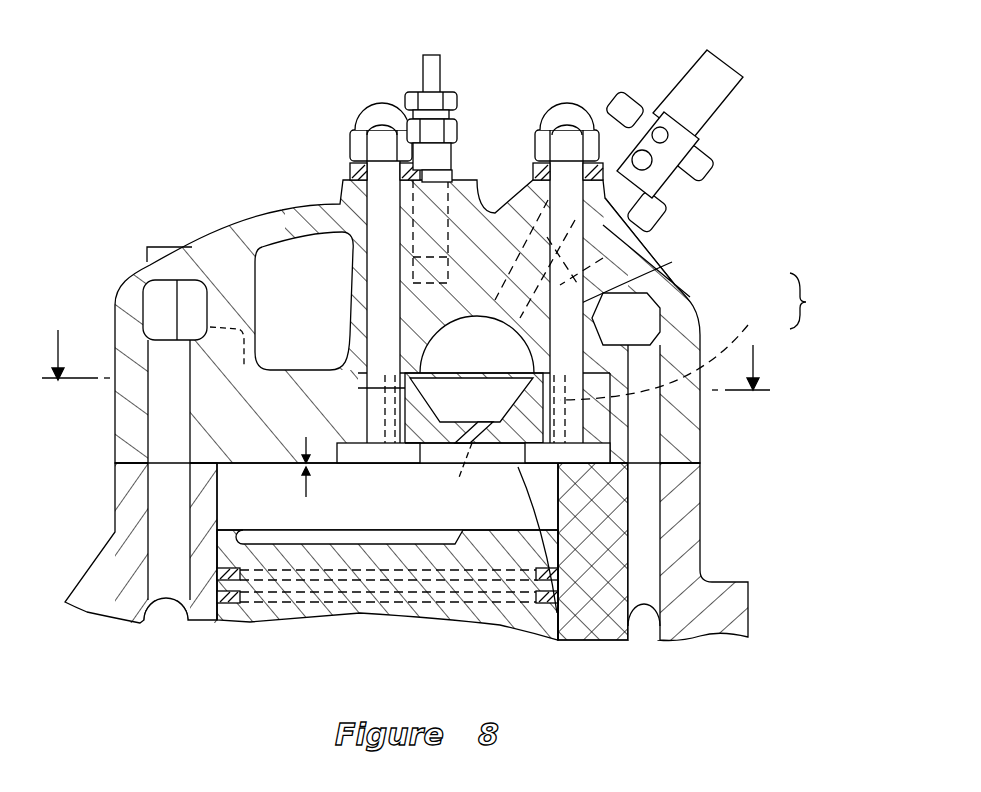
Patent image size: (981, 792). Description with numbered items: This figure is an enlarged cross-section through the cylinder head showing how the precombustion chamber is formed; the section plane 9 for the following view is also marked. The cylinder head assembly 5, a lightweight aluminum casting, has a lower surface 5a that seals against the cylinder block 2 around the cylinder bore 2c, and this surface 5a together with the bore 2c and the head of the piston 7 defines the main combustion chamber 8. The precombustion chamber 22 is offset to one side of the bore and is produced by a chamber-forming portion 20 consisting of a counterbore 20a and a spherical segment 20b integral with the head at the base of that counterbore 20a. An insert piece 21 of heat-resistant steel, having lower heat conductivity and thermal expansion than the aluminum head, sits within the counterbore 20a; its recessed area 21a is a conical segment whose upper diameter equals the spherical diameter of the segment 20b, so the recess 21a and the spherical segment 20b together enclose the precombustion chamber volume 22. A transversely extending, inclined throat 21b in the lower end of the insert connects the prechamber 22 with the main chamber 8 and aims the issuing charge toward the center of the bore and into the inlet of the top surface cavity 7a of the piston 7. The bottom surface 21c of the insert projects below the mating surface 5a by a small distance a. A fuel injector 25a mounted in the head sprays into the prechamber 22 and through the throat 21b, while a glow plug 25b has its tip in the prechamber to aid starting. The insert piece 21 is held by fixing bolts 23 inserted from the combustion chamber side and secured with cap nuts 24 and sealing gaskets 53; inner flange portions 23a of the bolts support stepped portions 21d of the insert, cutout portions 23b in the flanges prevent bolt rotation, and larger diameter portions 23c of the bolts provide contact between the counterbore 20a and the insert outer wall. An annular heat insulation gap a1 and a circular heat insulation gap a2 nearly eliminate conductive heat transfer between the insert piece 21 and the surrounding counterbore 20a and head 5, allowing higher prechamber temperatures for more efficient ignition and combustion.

The cylinder block 2 is at (712, 527).
The cylinder bore 2c is at (644, 640).
The cylinder head assembly 5 is at (708, 453).
The lower surface of the cylinder head 5a is at (256, 465).
The piston 7 is at (498, 615).
The top surface cavity 7a is at (354, 540).
The main combustion chamber 8 is at (555, 498).
The section line of FIG. 9 is at (397, 360).
The precombustion chamber forming portion 20 is at (814, 301).
The counterbore 20a is at (493, 350).
The spherical segment 20b is at (598, 289).
The insert piece 21 is at (420, 472).
The recessed area 21a is at (458, 450).
The throat 21b is at (446, 488).
The bottom surface of the insert piece 21c is at (445, 470).
The stepped portions 21d is at (612, 447).
The precombustion chamber 22 is at (460, 357).
The fixing bolts 23 is at (355, 275).
The inner flange portions 23a is at (700, 468).
The cutout portions 23b is at (546, 600).
The larger diameter portions 23c is at (585, 400).
The cap nuts 24 is at (372, 108).
The fuel injector 25a is at (702, 172).
The glow plug 25b is at (440, 72).
The sealing gaskets 53 is at (350, 172).
The projection distance a is at (303, 468).
The annular heat insulation gap a1 is at (385, 420).
The circular heat insulation gap a2 is at (367, 388).